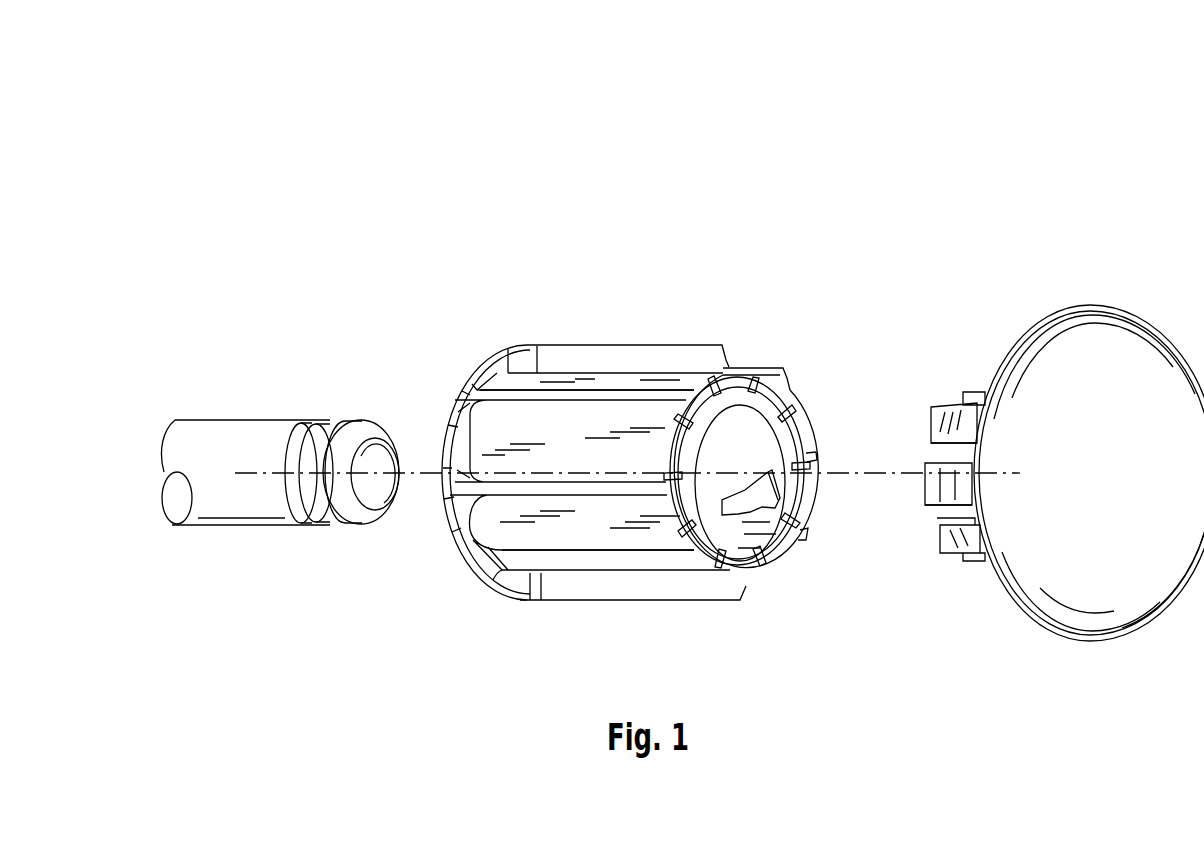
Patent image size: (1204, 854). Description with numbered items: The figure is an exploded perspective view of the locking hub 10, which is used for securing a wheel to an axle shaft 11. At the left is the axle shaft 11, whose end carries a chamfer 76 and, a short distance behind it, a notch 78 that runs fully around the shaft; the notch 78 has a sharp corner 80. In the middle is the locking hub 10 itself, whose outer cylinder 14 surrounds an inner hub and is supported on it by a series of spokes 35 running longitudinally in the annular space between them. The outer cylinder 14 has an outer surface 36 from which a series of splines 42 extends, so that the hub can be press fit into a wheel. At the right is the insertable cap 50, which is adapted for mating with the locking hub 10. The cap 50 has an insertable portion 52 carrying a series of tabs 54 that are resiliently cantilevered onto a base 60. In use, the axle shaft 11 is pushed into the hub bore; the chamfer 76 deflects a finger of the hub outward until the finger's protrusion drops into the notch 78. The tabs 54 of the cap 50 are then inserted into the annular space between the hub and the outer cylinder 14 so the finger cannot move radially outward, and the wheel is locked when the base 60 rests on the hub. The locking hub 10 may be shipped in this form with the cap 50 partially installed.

The locking hub 10 is at (936, 156).
The axle shaft 11 is at (207, 432).
The outer cylinder 14 is at (797, 422).
The spokes 35 is at (762, 368).
The outer surface 36 is at (567, 528).
The splines 42 is at (620, 575).
The insertable cap 50 is at (1122, 645).
The insertable portion 52 is at (944, 390).
The tabs 54 is at (945, 522).
The base 60 is at (1130, 330).
The chamfer 76 is at (368, 522).
The notch 78 is at (318, 433).
The sharp corner 80 is at (313, 453).